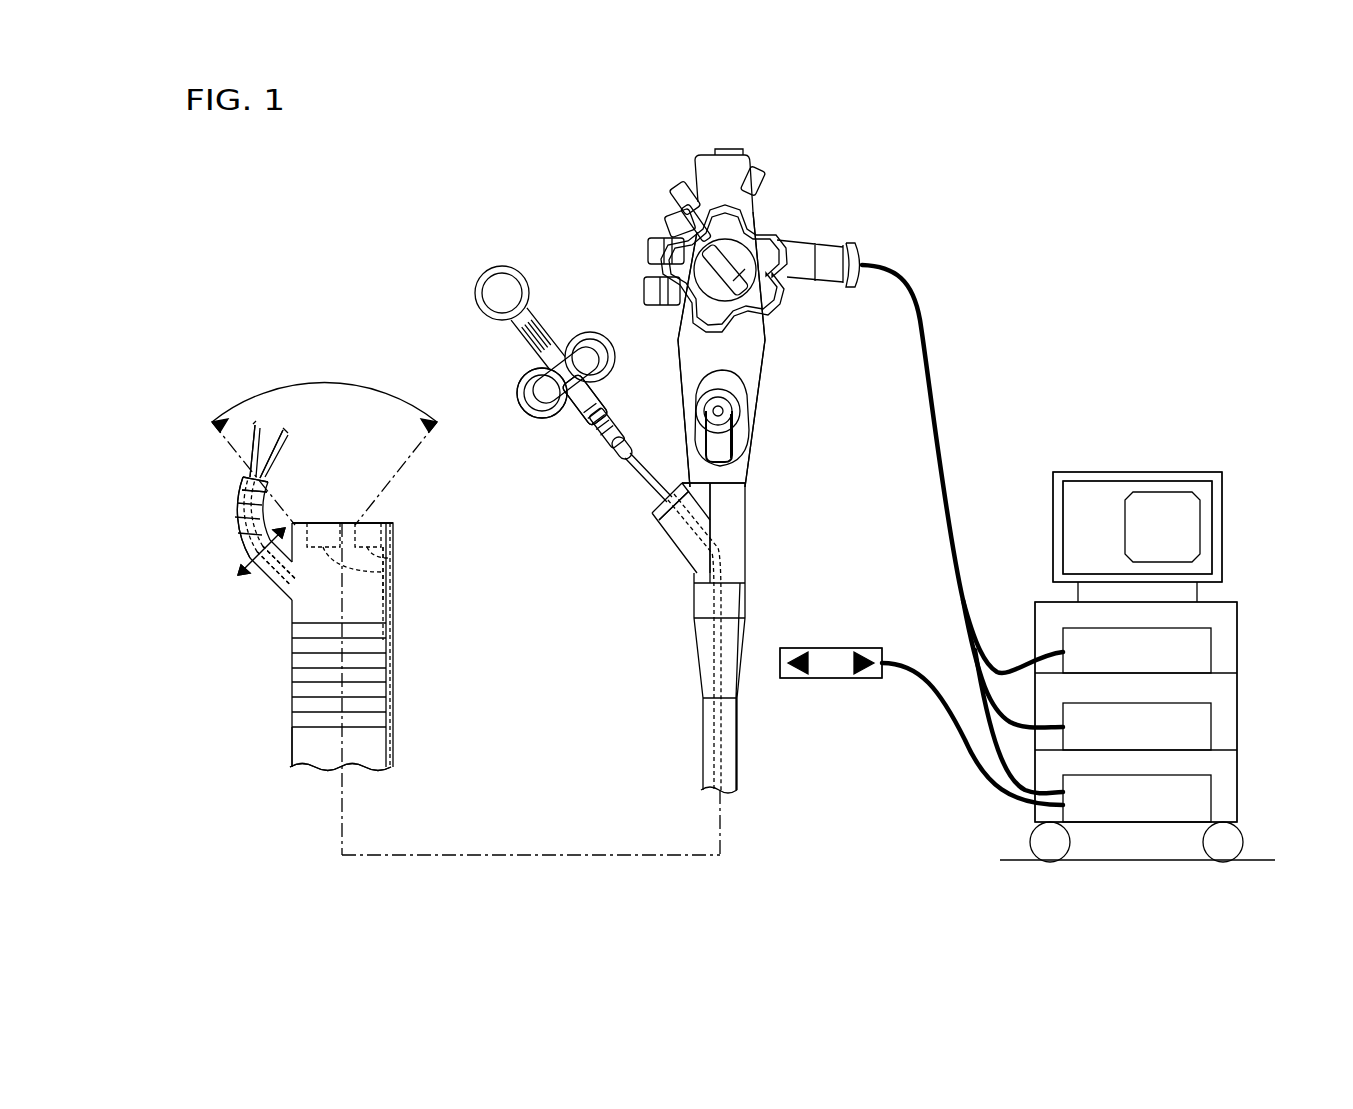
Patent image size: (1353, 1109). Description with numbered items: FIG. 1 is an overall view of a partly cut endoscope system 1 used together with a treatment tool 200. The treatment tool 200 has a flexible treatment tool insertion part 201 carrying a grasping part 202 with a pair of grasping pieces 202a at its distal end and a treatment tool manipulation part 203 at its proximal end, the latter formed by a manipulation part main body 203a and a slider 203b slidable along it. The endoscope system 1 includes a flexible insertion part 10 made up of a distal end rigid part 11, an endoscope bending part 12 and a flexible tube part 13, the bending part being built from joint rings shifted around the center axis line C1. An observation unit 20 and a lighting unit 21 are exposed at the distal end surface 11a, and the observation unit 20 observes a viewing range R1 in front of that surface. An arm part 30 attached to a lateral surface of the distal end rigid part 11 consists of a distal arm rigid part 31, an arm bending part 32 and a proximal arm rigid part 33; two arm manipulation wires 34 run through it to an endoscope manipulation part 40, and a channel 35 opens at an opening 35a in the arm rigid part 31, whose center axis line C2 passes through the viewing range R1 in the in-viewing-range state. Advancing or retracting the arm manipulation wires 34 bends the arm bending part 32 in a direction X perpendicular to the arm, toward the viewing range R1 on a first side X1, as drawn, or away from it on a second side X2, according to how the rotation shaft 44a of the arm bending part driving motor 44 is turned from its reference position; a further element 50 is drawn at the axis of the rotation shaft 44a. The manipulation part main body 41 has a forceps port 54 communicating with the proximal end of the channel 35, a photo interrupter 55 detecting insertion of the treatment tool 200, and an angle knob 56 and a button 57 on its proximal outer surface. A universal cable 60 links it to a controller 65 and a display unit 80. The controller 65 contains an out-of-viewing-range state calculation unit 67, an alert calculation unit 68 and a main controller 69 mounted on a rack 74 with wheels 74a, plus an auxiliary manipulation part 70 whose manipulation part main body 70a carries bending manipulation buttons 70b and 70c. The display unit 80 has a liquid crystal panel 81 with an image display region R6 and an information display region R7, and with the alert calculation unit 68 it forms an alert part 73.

The endoscope system 1 is at (985, 232).
The insertion part 10 is at (455, 600).
The distal end rigid part 11 is at (386, 602).
The distal end surface 11a is at (380, 523).
The endoscope bending part 12 is at (386, 664).
The flexible tube part 13 is at (386, 745).
The observation unit 20 is at (395, 572).
The lighting unit 21 is at (370, 552).
The arm part 30 is at (176, 468).
The arm rigid part 31 is at (243, 482).
The arm bending part 32 is at (237, 512).
The arm rigid part 33 is at (268, 578).
The arm manipulation wires 34 is at (708, 432).
The channel 35 is at (290, 574).
The opening 35a is at (258, 480).
The endoscope manipulation part 40 is at (640, 236).
The manipulation part main body 41 is at (680, 345).
The arm bending part driving motor 44 is at (732, 392).
The rotation shaft 44a is at (732, 414).
The rotation center 50 is at (724, 410).
The forceps port 54 is at (663, 497).
The photo interrupter 55 is at (665, 532).
The angle knob 56 is at (782, 258).
The button 57 is at (676, 182).
The universal cable 60 is at (840, 238).
The controller 65 is at (1250, 676).
The out-of-viewing-range state calculation unit 67 is at (1211, 722).
The alert calculation unit 68 is at (1211, 640).
The main controller 69 is at (1211, 798).
The auxiliary manipulation part 70 is at (828, 645).
The manipulation part main body 70a is at (831, 680).
The bending manipulation button 70b is at (866, 680).
The bending manipulation button 70c is at (794, 680).
The alert part 73 is at (1278, 484).
The rack 74 is at (1038, 620).
The wheels 74a is at (1070, 844).
The display unit 80 is at (1222, 510).
The liquid crystal panel 81 is at (1063, 521).
The treatment tool 200 is at (535, 282).
The treatment tool insertion part 201 is at (262, 470).
The grasping part 202 is at (330, 292).
The grasping pieces 202a is at (284, 432).
The treatment tool manipulation part 203 is at (498, 500).
The manipulation part main body 203a is at (608, 447).
The slider 203b is at (542, 419).
The center axis line C1 is at (498, 853).
The center axis line C2 is at (245, 455).
The viewing range R1 is at (324, 437).
The image display region R6 is at (1162, 505).
The information display region R7 is at (1100, 505).
The direction X is at (258, 549).
The first side X1 is at (279, 520).
The second side X2 is at (231, 571).